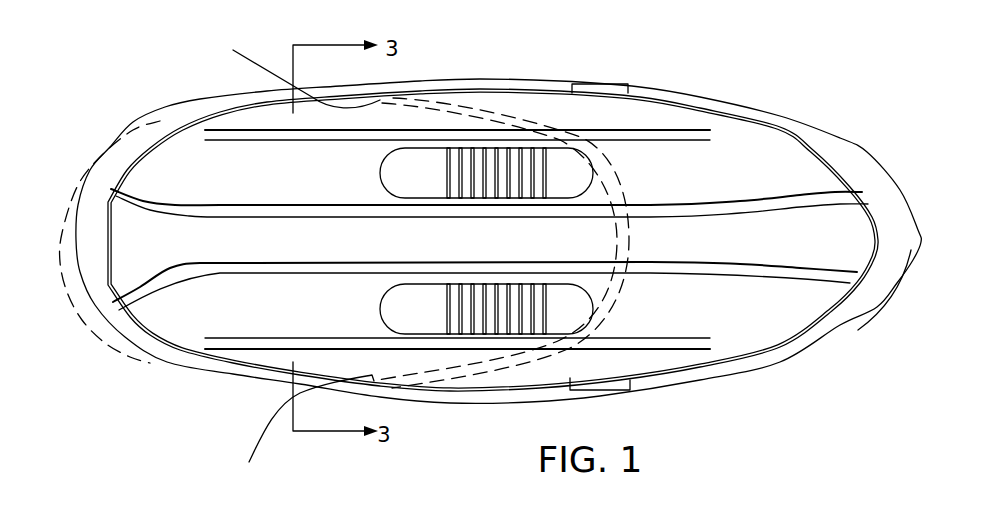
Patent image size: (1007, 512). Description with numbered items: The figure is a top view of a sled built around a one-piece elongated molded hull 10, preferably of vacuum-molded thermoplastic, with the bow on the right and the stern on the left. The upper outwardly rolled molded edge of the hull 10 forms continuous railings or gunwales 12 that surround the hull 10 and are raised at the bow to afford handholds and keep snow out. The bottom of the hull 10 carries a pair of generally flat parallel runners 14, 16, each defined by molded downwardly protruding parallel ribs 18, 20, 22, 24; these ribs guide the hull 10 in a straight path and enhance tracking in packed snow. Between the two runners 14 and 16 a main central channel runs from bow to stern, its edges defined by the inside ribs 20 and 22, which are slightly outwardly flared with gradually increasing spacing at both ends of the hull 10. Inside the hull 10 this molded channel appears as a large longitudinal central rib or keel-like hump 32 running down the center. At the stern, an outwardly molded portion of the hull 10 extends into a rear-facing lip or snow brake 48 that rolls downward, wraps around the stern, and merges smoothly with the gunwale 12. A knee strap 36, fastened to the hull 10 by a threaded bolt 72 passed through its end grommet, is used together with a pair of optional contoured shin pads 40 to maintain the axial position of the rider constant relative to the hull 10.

The hull 10 is at (126, 110).
The gunwales 12 is at (481, 86).
The runner 14 is at (457, 157).
The runner 16 is at (457, 321).
The rib 18 is at (683, 143).
The inside rib 20 is at (773, 208).
The inside rib 22 is at (746, 278).
The rib 24 is at (638, 340).
The keel-like hump 32 is at (489, 254).
The knee strap 36 is at (630, 238).
The shin pads 40 is at (381, 171).
The snow brake 48 is at (62, 218).
The bolt 72 is at (296, 259).